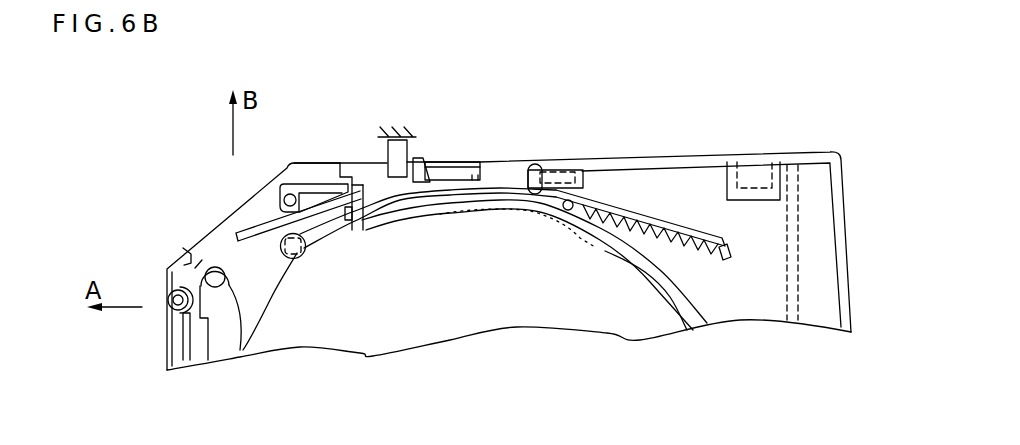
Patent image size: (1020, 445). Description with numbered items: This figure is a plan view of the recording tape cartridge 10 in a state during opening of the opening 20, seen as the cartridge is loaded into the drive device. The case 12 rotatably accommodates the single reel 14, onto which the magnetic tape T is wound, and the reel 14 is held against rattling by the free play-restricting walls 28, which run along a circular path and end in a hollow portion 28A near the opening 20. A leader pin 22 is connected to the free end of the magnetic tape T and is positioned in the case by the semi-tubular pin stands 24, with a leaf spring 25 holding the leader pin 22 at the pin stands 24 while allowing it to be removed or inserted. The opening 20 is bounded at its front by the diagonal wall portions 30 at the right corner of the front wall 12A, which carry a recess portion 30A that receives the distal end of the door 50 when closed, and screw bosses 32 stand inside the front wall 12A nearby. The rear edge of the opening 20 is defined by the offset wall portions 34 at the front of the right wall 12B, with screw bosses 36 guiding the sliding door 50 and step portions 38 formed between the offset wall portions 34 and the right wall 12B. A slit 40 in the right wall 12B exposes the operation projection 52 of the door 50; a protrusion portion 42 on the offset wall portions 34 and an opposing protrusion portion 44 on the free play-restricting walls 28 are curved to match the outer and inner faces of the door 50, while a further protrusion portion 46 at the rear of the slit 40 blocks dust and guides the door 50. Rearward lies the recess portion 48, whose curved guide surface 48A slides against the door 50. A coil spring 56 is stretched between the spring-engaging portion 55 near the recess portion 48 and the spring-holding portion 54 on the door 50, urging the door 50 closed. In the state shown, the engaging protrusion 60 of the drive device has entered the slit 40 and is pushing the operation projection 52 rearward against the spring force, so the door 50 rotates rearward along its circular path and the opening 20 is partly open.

The recording tape cartridge 10 is at (612, 90).
The case 12 is at (754, 146).
The front wall 12A is at (166, 358).
The right wall 12B is at (655, 160).
The reel 14 is at (648, 335).
The opening 20 is at (222, 240).
The leader pin 22 is at (240, 343).
The pin stands 24 is at (230, 286).
The leaf spring 25 is at (190, 362).
The free play-restricting walls 28 is at (398, 208).
The hollow portion 28A is at (303, 258).
The diagonal wall portions 30 is at (168, 268).
The recess portion 30A is at (190, 250).
The screw bosses 32 is at (168, 304).
The offset wall portions 34 is at (318, 172).
The screw bosses 36 is at (278, 184).
The step portions 38 is at (355, 177).
The slit 40 is at (458, 164).
The protrusion portion 42 is at (358, 220).
The protrusion portion 44 is at (346, 242).
The protrusion portion 46 is at (479, 180).
The recess portion 48 is at (560, 162).
The guide surface 48A is at (529, 170).
The door 50 is at (258, 220).
The operation projection 52 is at (418, 158).
The spring-holding portion 54 is at (730, 256).
The spring-engaging portion 55 is at (568, 210).
The coil spring 56 is at (671, 256).
The engaging protrusion 60 is at (394, 134).
The magnetic tape T is at (213, 300).